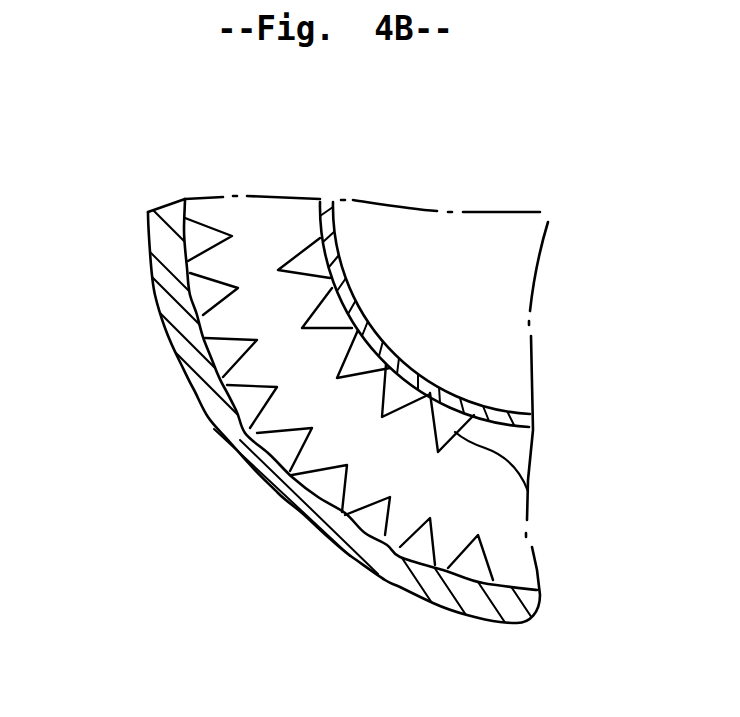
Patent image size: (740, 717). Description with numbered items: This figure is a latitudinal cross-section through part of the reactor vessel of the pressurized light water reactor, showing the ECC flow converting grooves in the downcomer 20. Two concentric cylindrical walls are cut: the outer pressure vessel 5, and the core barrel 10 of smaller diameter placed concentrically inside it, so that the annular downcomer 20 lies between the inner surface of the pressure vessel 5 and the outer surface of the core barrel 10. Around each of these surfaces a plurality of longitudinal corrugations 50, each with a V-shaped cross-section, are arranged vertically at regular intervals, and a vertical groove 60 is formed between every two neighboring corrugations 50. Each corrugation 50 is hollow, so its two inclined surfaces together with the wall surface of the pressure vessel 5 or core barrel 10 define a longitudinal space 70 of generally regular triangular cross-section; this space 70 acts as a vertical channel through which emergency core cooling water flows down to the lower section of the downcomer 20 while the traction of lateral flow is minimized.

The pressure vessel 5 is at (167, 245).
The core barrel 10 is at (354, 200).
The downcomer 20 is at (241, 197).
The longitudinal corrugations 50 is at (437, 530).
The vertical groove 60 is at (400, 410).
The longitudinal space 70 is at (432, 553).